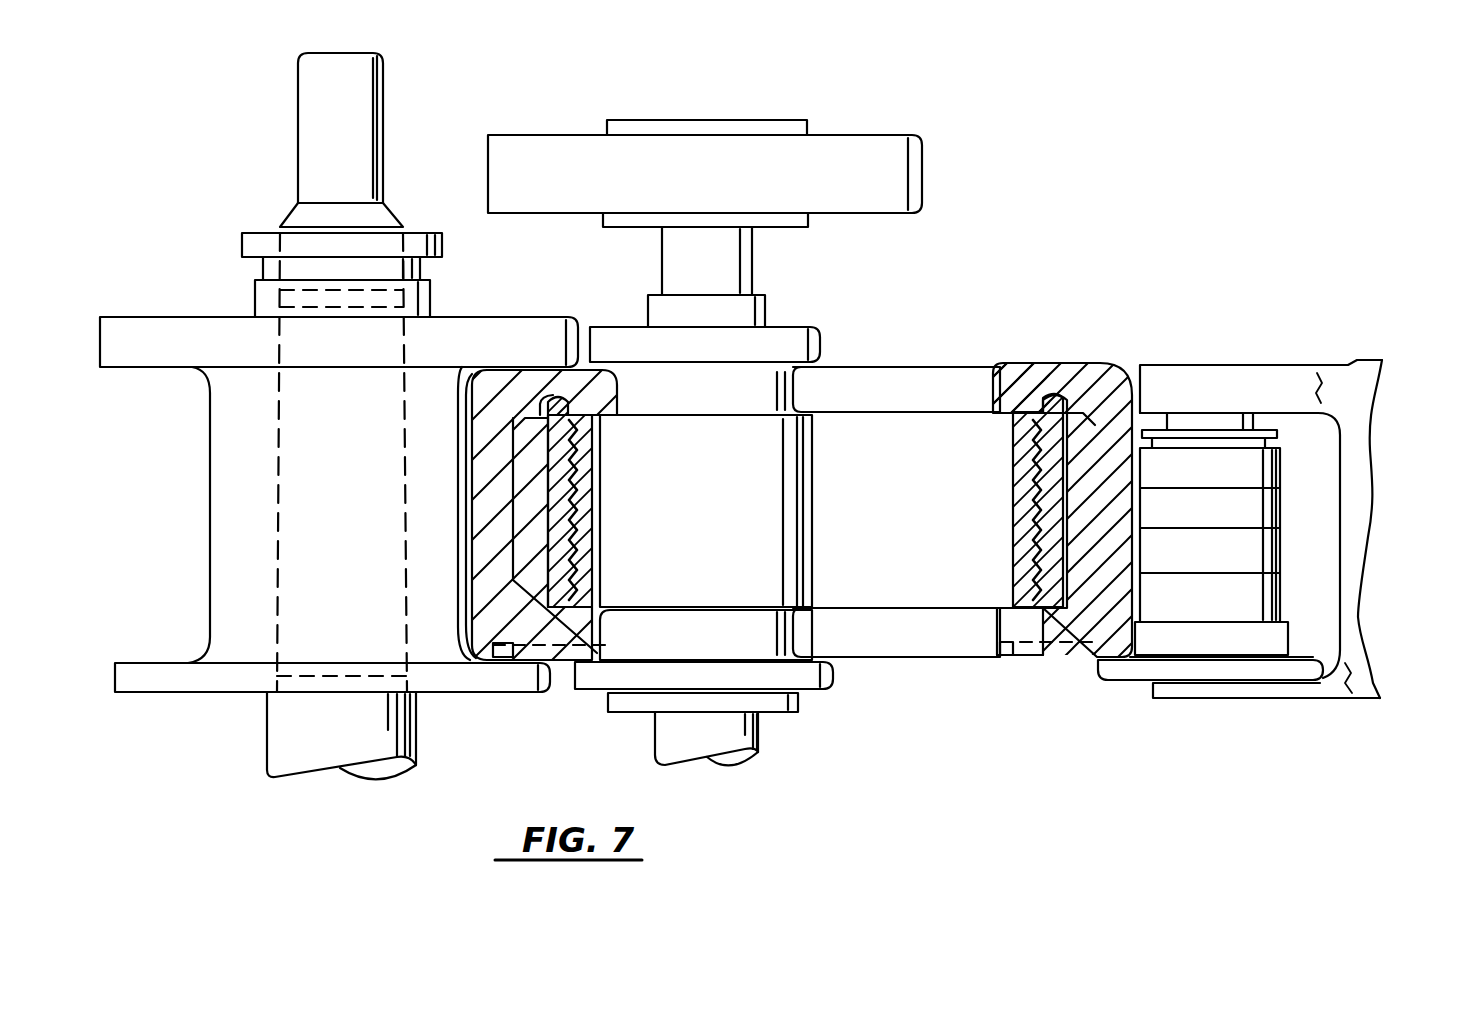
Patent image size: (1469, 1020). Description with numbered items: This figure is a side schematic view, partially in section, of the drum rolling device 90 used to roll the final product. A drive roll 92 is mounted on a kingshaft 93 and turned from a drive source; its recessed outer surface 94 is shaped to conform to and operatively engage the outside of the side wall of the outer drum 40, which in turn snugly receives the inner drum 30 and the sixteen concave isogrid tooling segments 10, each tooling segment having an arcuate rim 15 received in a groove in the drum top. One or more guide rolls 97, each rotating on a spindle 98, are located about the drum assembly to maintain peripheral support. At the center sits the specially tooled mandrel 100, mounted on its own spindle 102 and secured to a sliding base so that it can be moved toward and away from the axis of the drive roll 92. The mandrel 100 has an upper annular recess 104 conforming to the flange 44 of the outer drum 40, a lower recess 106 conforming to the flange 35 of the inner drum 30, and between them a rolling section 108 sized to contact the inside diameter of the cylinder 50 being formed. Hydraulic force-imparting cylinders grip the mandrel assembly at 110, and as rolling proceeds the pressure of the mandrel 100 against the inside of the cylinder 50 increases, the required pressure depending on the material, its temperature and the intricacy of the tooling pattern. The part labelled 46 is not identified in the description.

The isogrid tooling segment 10 is at (592, 505).
The arcuate rim 15 is at (1057, 402).
The inner drum 30 is at (1050, 633).
The central circular opening 35 is at (990, 645).
The outer drum 40 is at (1072, 360).
The circular opening 44 is at (995, 372).
The spool body 46 is at (457, 530).
The cylinder 50 is at (587, 535).
The drum rolling device 90 is at (1180, 303).
The drive roll 92 is at (520, 330).
The kingshaft 93 is at (265, 733).
The recessed outer surface 94 is at (467, 462).
The guide roll 97 is at (1310, 488).
The spindle 98 is at (1260, 425).
The mandrel 100 is at (827, 542).
The spindle 102 is at (760, 740).
The upper annular recess 104 is at (795, 392).
The lower recess 106 is at (788, 635).
The rolling section 108 is at (815, 505).
The mandrel assembly gripping location 110 is at (920, 152).